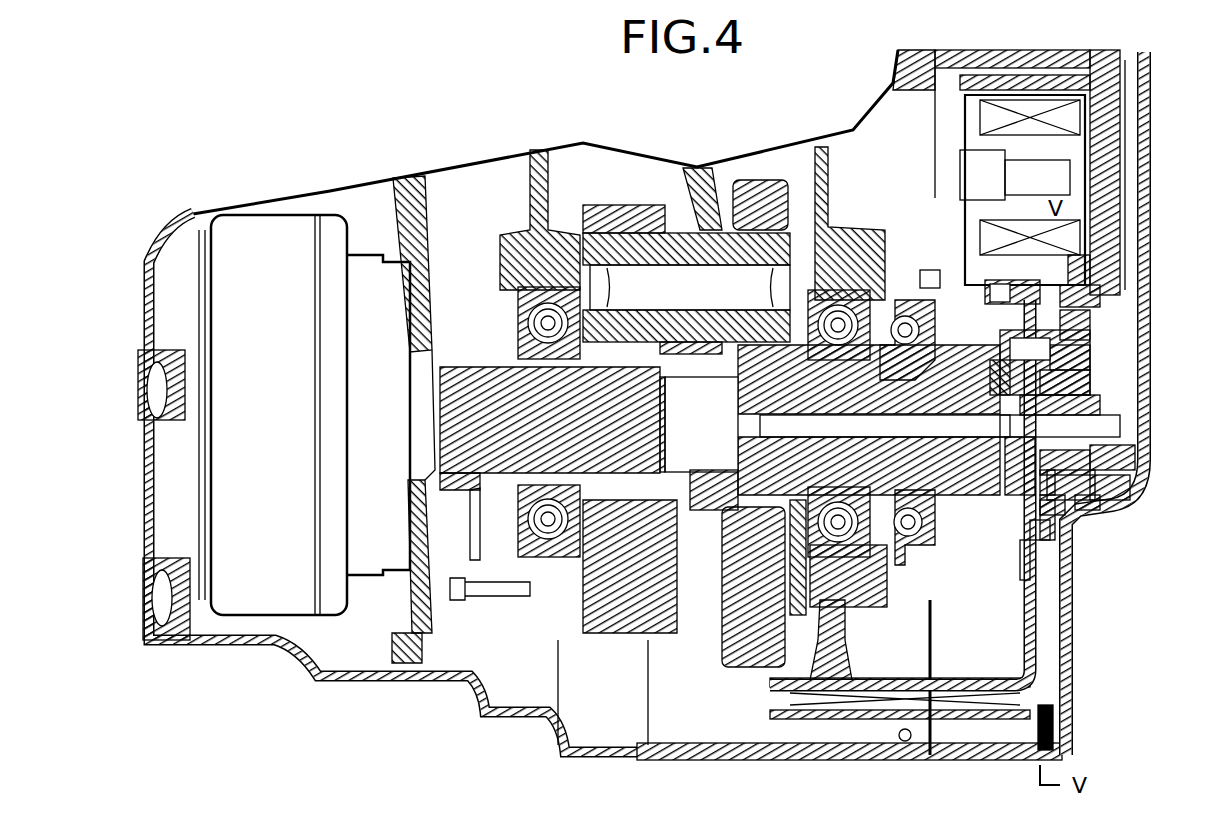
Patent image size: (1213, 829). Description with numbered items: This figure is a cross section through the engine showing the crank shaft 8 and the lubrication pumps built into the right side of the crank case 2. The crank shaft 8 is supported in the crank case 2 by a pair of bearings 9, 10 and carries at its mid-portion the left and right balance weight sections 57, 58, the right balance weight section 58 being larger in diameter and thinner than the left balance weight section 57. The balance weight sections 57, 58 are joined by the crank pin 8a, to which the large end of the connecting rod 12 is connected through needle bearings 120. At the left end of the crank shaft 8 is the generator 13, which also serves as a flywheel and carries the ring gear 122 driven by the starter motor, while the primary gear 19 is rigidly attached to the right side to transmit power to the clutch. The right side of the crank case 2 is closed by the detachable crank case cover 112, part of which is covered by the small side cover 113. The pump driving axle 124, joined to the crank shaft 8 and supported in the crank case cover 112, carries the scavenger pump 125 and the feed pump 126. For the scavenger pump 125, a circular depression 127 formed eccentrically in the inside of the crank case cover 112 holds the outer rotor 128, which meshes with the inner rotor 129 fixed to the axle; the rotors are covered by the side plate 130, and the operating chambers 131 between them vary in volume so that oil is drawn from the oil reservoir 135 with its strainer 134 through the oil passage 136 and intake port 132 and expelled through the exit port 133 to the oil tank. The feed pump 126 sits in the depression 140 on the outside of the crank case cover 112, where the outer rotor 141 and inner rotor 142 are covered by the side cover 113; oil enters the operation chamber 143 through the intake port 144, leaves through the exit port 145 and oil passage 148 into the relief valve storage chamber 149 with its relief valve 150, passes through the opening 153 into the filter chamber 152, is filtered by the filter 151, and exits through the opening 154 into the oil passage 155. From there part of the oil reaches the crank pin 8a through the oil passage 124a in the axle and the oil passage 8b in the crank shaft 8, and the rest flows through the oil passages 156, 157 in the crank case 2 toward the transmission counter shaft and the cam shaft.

The crank case 2 is at (722, 760).
The crank shaft 8 is at (505, 365).
The crank pin 8a is at (686, 273).
The oil passage 8b is at (752, 430).
The bearing 9 is at (528, 325).
The bearing 10 is at (885, 330).
The connecting rod 12 is at (687, 182).
The generator 13 is at (283, 411).
The primary gear 19 is at (930, 272).
The left balance weight section 57 is at (680, 575).
The right balance weight section 58 is at (722, 618).
The crank case cover 112 is at (1074, 600).
The side cover 113 is at (1135, 350).
The needle bearings 120 is at (708, 340).
The ring gear 122 is at (430, 190).
The pump driving axle 124 is at (1000, 495).
The oil passage 124a is at (1125, 432).
The scavenger pump 125 is at (1022, 378).
The feed pump 126 is at (1085, 405).
The circular depression 127 is at (987, 290).
The outer rotor 128 is at (1025, 555).
The inner rotor 129 is at (1040, 482).
The side plate 130 is at (1040, 520).
The operating chambers 131 is at (1008, 352).
The intake port 132 is at (1126, 540).
The exit port 133 is at (1192, 417).
The strainer 134 is at (870, 722).
The oil reservoir 135 is at (906, 742).
The oil passage 136 is at (1055, 634).
The depression 140 is at (1055, 525).
The outer rotor 141 is at (1105, 510).
The inner rotor 142 is at (1138, 465).
The operation chamber 143 is at (1125, 500).
The intake port 144 is at (1130, 478).
The exit port 145 is at (1093, 385).
The oil passage 148 is at (1095, 312).
The relief valve storage chamber 149 is at (1075, 288).
The relief valve 150 is at (992, 298).
The filter 151 is at (960, 211).
The filter chamber 152 is at (985, 152).
The opening 153 is at (1075, 265).
The opening 154 is at (1105, 180).
The oil passage 155 is at (1130, 212).
The oil passage 156 is at (1020, 50).
The oil passage 157 is at (930, 55).